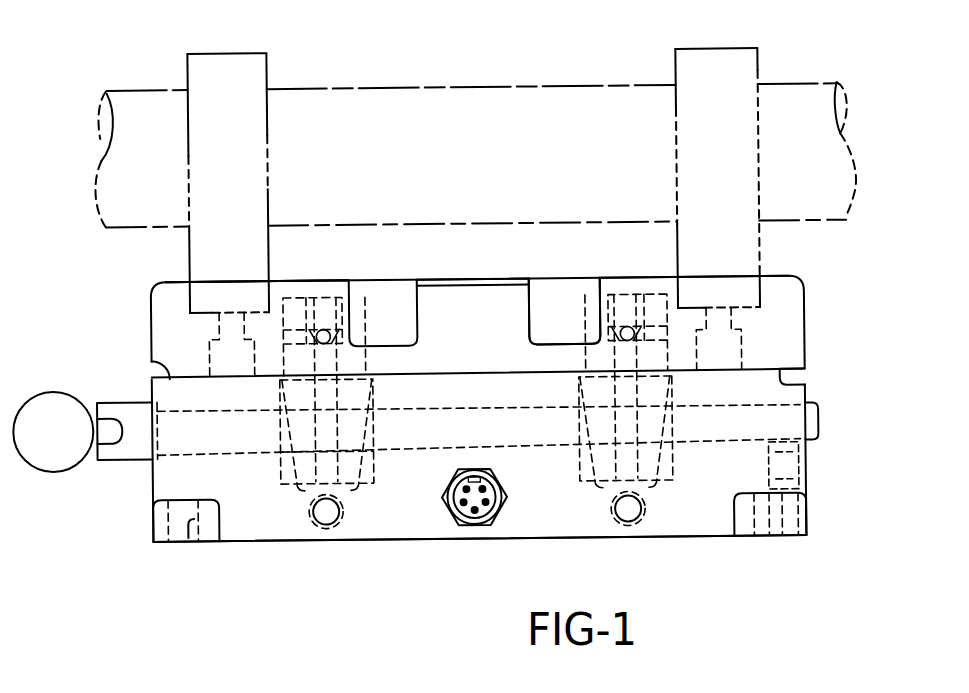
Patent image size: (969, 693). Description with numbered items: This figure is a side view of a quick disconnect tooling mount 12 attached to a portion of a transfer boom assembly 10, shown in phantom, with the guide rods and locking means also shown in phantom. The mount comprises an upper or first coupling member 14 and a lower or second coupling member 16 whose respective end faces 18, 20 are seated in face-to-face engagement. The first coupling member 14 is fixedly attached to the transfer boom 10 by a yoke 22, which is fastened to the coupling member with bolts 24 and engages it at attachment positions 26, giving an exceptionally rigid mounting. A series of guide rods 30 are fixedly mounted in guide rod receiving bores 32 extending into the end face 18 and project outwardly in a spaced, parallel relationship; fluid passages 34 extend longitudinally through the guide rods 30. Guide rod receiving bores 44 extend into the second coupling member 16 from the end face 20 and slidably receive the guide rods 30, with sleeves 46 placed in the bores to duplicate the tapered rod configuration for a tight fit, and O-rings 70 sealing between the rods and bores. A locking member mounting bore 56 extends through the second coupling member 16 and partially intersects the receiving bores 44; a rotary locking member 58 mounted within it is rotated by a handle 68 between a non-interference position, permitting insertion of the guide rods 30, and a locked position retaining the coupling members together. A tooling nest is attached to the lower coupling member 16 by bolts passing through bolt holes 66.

The transfer boom assembly 10 is at (772, 86).
The quick disconnect tooling mount 12 is at (832, 345).
The first coupling member 14 is at (796, 277).
The second coupling member 16 is at (150, 490).
The end face 18 is at (806, 384).
The end face 20 is at (154, 360).
The yoke 22 is at (272, 56).
The bolts 24 is at (212, 352).
The attachment positions 26 is at (196, 292).
The guide rods 30 is at (290, 397).
The guide rod receiving bores 32 is at (594, 362).
The fluid passages 34 is at (584, 392).
The guide rod receiving bores 44 is at (370, 392).
The sleeves 46 is at (278, 474).
The locking member mounting bore 56 is at (455, 449).
The rotary locking member 58 is at (534, 449).
The bolt holes 66 is at (190, 543).
The handle 68 is at (48, 468).
The O-rings 70 is at (359, 486).